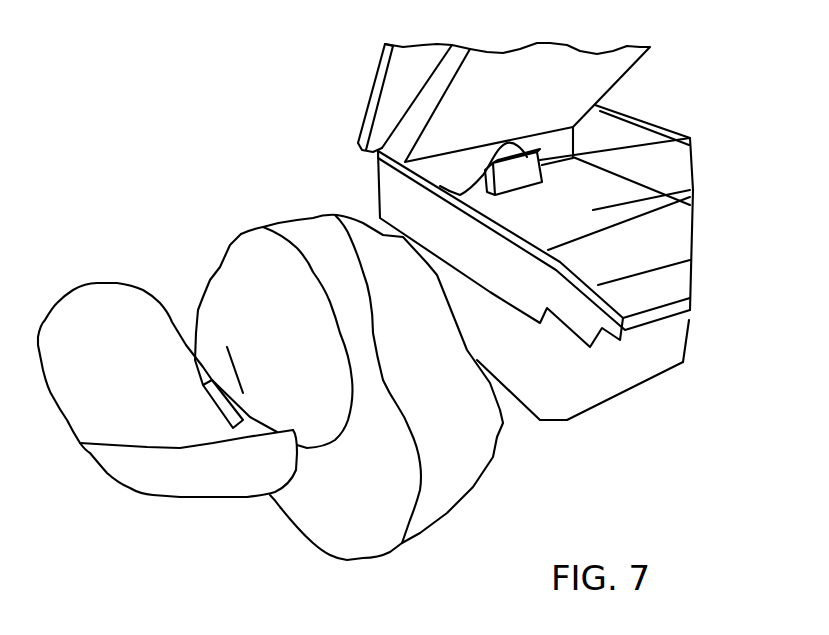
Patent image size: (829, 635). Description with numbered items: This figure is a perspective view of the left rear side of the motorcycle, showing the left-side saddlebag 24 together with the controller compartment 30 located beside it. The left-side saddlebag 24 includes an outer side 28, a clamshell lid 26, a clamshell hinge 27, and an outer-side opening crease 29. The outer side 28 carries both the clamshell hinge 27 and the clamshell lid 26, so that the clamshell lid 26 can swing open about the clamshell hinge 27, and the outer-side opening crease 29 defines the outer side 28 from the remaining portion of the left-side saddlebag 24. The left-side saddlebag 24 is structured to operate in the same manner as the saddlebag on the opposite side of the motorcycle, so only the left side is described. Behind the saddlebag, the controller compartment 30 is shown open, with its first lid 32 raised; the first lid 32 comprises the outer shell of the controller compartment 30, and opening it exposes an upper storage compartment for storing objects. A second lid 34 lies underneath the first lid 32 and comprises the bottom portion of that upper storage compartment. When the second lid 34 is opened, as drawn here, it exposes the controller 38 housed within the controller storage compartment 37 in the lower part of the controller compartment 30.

The left-side saddlebag 24 is at (340, 240).
The clamshell lid 26 is at (92, 318).
The clamshell hinge 27 is at (212, 370).
The outer side 28 is at (337, 505).
The outer-side opening crease 29 is at (400, 407).
The controller compartment 30 is at (410, 207).
The first lid 32 is at (393, 77).
The second lid 34 is at (577, 82).
The controller storage compartment 37 is at (690, 190).
The controller 38 is at (690, 138).